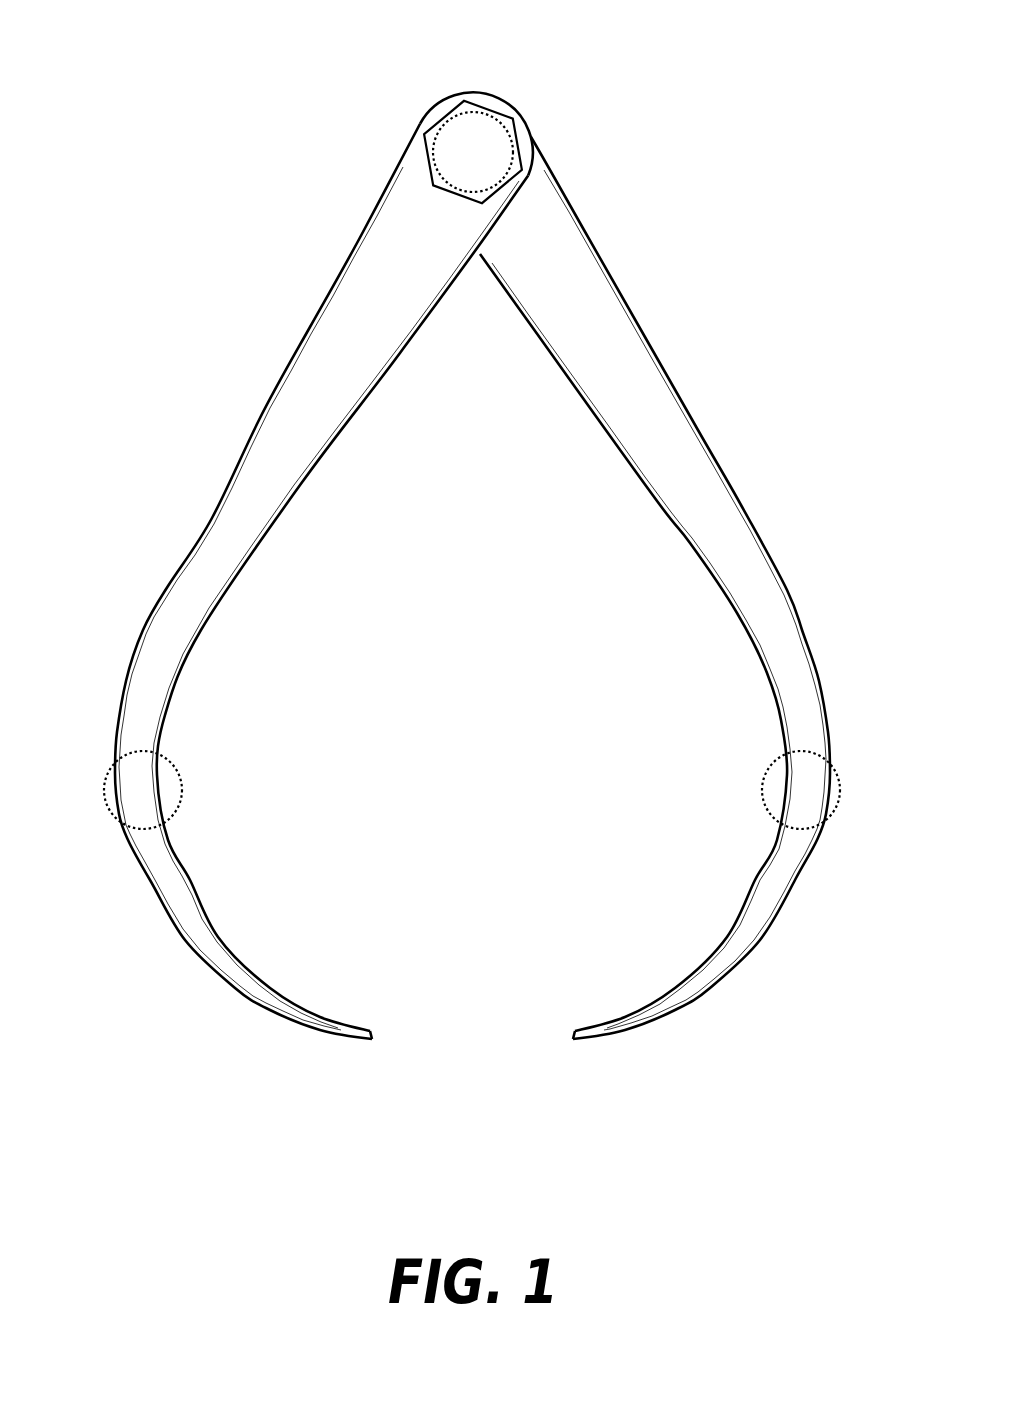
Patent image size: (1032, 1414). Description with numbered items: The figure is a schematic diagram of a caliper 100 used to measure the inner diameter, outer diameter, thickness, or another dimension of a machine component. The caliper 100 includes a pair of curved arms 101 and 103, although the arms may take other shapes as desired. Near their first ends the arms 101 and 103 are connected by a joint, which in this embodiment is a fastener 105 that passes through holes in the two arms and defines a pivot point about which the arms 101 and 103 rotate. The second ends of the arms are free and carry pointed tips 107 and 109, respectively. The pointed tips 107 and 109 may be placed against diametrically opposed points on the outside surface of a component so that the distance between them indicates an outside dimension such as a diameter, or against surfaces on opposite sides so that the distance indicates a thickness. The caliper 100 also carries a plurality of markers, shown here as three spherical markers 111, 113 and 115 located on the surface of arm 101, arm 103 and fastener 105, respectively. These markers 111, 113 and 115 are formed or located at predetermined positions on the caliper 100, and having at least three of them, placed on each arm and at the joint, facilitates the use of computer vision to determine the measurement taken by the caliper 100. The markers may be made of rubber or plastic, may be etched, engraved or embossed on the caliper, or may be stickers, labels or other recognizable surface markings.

The caliper 100 is at (684, 200).
The arm 101 is at (266, 437).
The arm 103 is at (687, 439).
The fastener 105 is at (498, 115).
The marker 115 is at (442, 128).
The pointed tip 107 is at (365, 1040).
The pointed tip 109 is at (580, 1040).
The marker 111 is at (139, 760).
The marker 113 is at (804, 753).